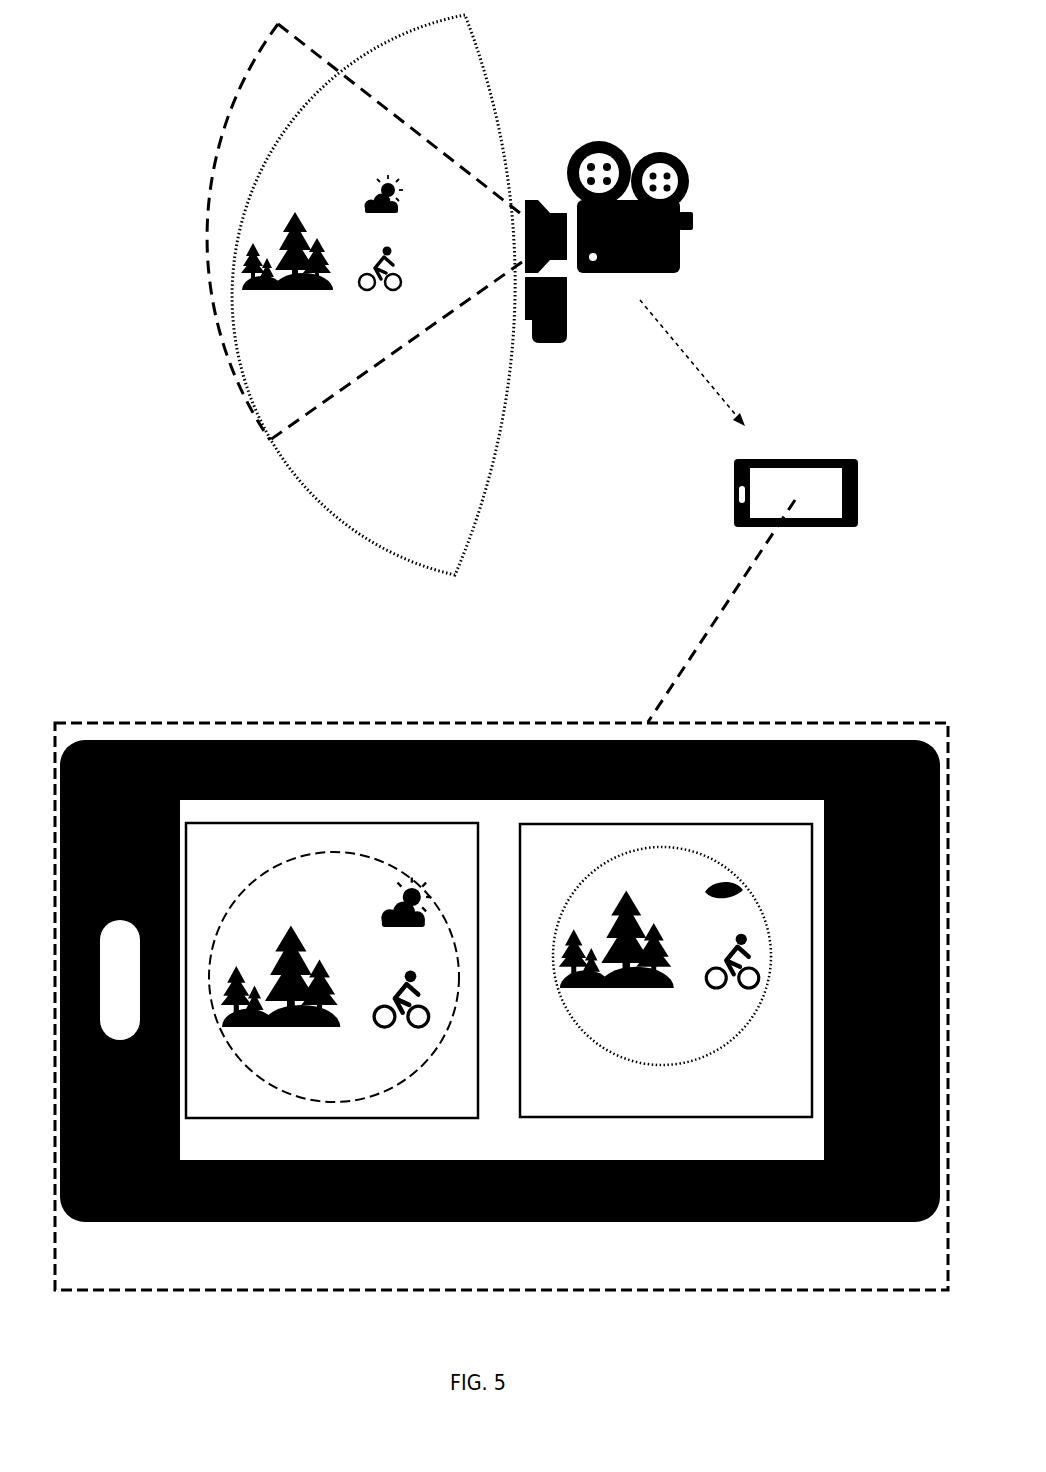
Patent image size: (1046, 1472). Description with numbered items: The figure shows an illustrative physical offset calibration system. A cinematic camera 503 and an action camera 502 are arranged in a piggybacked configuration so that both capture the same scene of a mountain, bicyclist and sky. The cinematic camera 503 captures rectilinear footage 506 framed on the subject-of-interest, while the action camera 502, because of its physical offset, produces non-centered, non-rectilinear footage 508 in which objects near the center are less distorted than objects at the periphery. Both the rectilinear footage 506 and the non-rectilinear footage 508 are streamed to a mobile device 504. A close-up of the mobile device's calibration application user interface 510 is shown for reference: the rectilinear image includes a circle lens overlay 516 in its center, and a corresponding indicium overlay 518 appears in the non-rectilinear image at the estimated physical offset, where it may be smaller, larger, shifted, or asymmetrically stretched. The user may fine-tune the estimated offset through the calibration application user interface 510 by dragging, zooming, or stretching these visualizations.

The action camera 502 is at (570, 313).
The cinematic camera 503 is at (598, 141).
The mobile device 504 is at (863, 493).
The rectilinear footage 506 is at (205, 237).
The non-rectilinear footage 508 is at (478, 477).
The calibration application user interface 510 is at (769, 1243).
The circle lens overlay 516 is at (410, 862).
The indicium overlay 518 is at (746, 860).